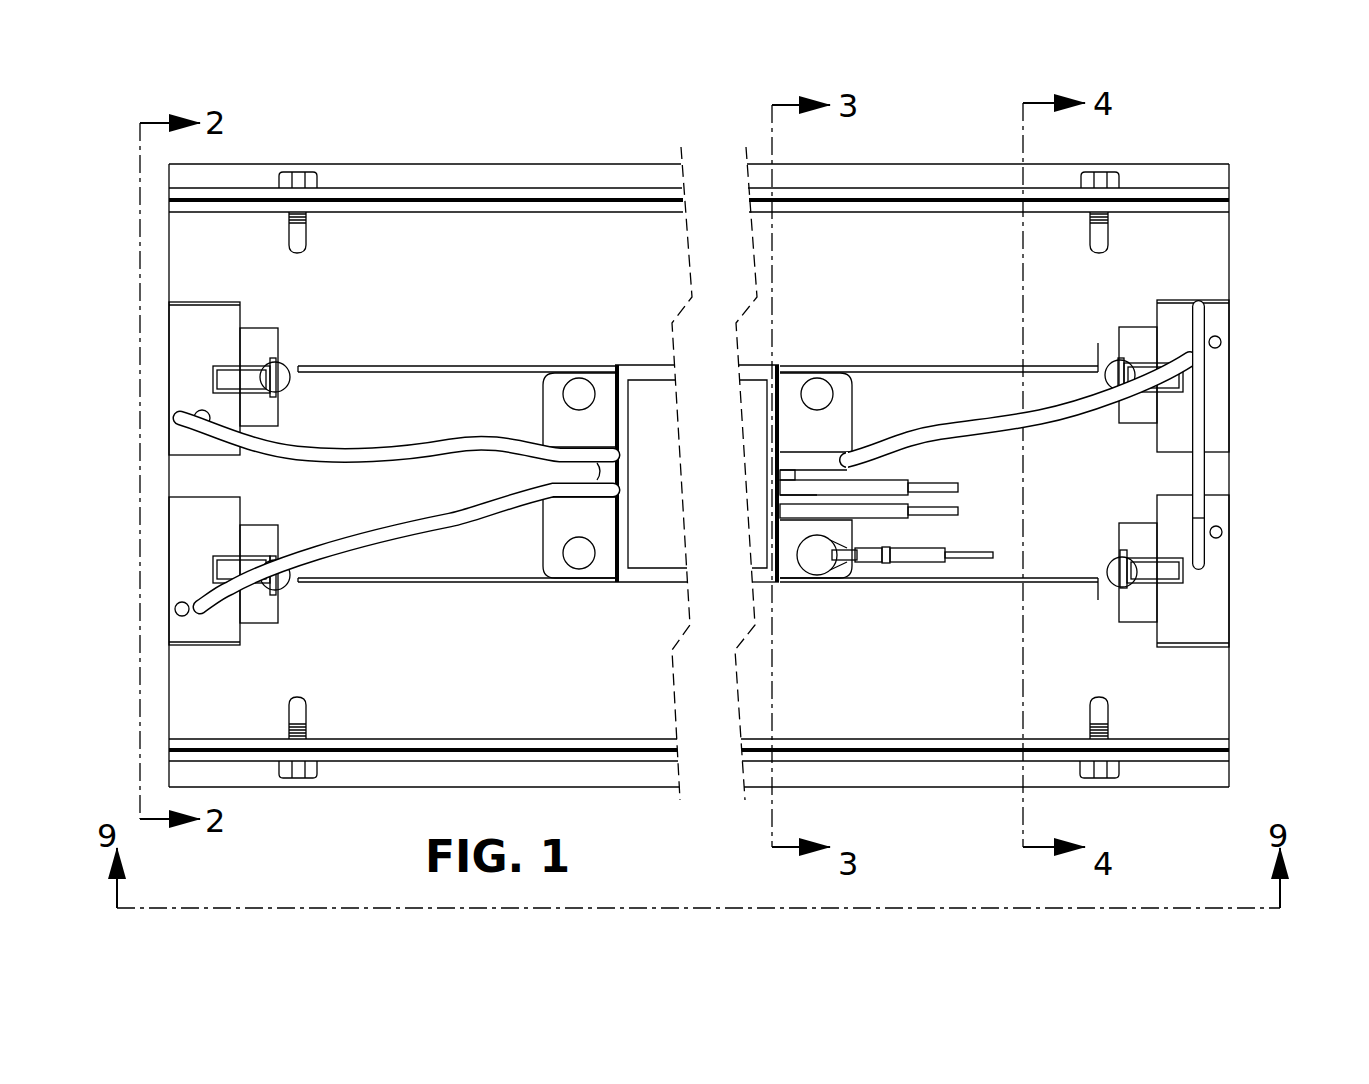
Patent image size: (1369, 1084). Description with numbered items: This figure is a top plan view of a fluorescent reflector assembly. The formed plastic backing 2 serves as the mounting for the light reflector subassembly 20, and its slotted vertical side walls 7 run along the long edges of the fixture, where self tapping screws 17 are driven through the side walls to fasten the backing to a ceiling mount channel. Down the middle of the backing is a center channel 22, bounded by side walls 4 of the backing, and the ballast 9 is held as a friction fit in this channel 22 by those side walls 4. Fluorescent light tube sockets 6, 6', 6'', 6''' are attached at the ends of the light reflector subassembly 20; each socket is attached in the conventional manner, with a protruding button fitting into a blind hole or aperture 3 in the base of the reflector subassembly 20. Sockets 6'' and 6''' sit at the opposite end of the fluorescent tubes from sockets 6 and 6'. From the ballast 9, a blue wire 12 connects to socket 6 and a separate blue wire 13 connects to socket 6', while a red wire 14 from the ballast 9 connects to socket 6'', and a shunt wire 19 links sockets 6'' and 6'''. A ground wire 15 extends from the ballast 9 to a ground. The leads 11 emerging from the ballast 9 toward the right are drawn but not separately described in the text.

The light reflector subassembly 20 is at (406, 135).
The formed plastic backing 2 is at (596, 300).
The blind hole or aperture 3 is at (291, 364).
The side wall of center channel 4 is at (873, 363).
The fluorescent light tube socket 6 is at (196, 571).
The fluorescent light tube socket 6' is at (191, 374).
The fluorescent light tube socket 6'' is at (1223, 375).
The fluorescent light tube socket 6''' is at (1223, 575).
The side wall of formed plastic backing 7 is at (597, 163).
The ballast 9 is at (666, 539).
The cable lead 11 is at (966, 478).
The blue wire 12 is at (348, 543).
The blue wire 13 is at (324, 443).
The red wire 14 is at (1015, 414).
The ground wire 15 is at (884, 566).
The self tapping screw 17 is at (299, 170).
The shunt wire 19 is at (1207, 437).
The channel 22 is at (490, 575).